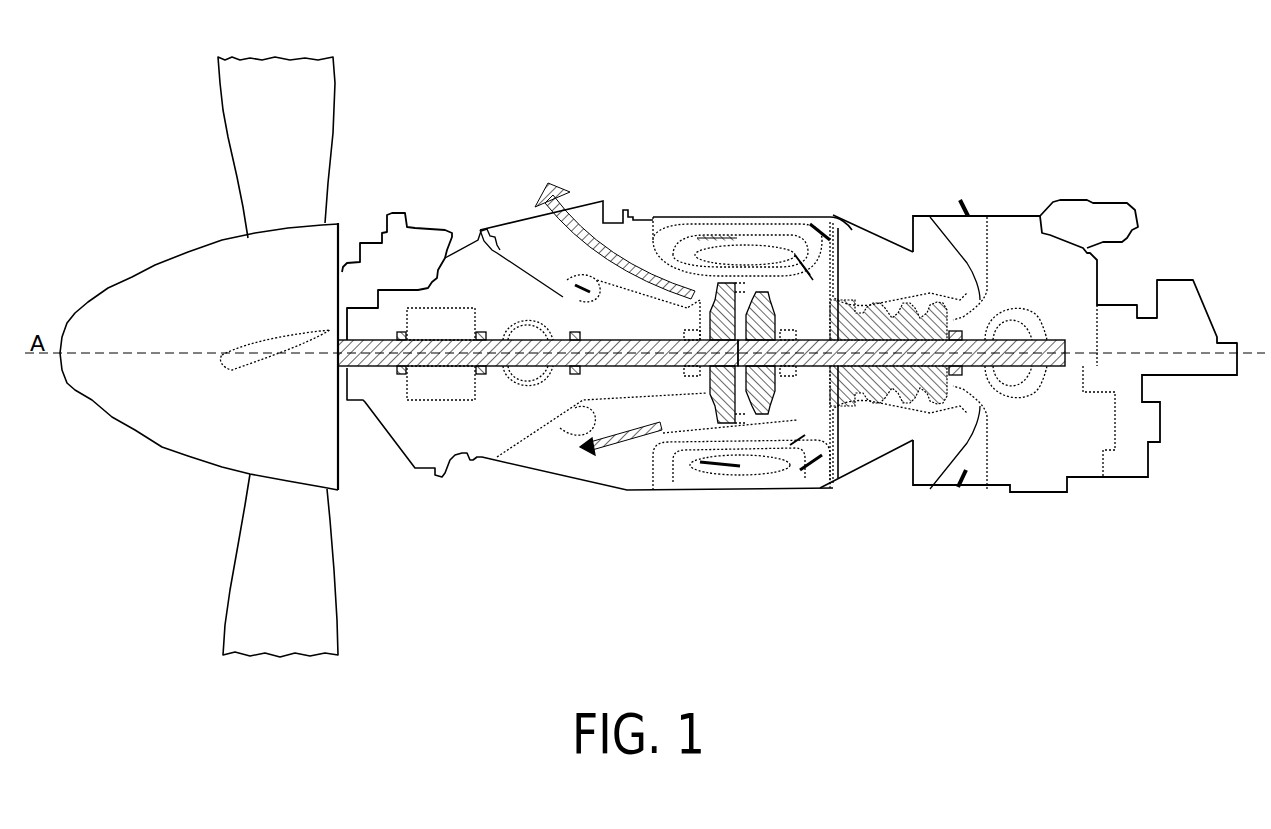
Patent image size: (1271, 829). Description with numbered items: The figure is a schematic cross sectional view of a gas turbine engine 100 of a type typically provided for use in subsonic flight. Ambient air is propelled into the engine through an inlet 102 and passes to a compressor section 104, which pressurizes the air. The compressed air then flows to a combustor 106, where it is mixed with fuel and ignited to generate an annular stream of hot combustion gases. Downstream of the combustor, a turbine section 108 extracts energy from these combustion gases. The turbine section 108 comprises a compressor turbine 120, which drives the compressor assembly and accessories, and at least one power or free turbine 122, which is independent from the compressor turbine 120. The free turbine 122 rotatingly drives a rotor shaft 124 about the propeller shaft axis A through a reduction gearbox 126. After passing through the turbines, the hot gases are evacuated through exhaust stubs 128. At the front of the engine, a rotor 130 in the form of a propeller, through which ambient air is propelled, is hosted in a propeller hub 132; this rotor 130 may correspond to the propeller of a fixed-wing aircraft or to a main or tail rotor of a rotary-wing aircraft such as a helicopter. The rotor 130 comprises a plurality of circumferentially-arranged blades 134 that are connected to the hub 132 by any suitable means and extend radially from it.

The gas turbine engine 100 is at (658, 112).
The inlet 102 is at (974, 195).
The compressor section 104 is at (870, 253).
The combustor 106 is at (770, 244).
The turbine section 108 is at (733, 268).
The compressor turbine 120 is at (760, 397).
The free turbine 122 is at (722, 402).
The rotor shaft 124 is at (388, 370).
The reduction gearbox 126 is at (462, 392).
The exhaust stubs 128 is at (522, 192).
The rotor 130 is at (190, 184).
The propeller hub 132 is at (178, 276).
The blades 134 is at (325, 135).